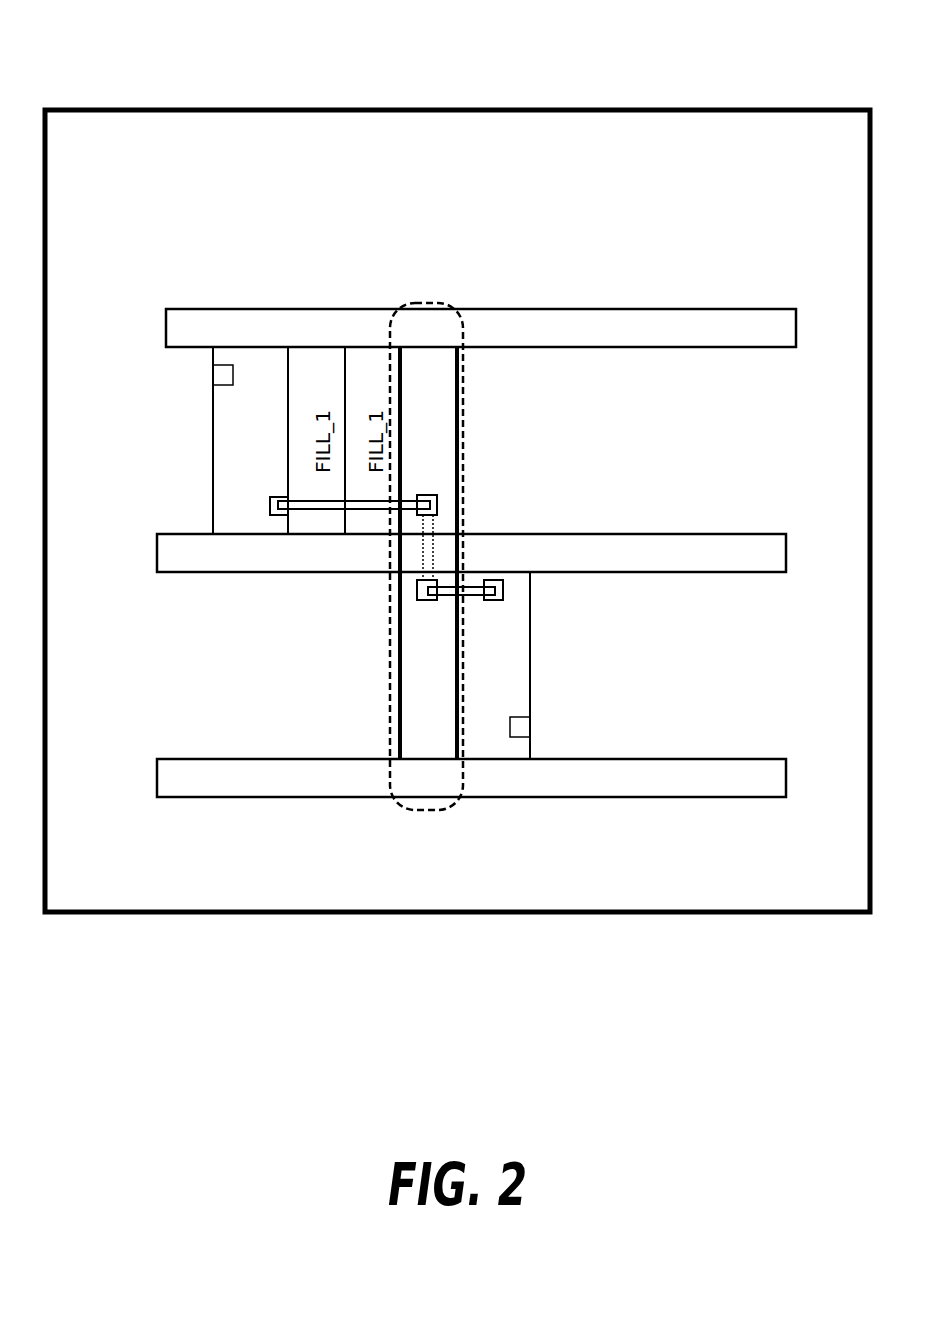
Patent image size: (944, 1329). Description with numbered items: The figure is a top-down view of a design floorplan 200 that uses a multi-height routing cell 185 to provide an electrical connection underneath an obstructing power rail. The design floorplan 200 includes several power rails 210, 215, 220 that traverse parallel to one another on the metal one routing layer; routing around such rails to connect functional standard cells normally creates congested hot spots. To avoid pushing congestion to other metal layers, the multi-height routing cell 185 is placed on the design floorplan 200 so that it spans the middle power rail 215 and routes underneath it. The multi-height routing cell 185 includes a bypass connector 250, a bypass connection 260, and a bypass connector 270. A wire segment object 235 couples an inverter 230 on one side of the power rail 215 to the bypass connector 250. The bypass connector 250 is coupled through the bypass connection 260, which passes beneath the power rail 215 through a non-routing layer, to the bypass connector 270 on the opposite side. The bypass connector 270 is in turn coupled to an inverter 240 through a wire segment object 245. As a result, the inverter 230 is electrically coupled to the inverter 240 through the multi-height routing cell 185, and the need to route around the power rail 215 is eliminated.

The design floorplan 200 is at (457, 458).
The multi-height routing cell 185 is at (295, 504).
The power rail 210 is at (443, 325).
The power rail 215 is at (433, 550).
The power rail 220 is at (433, 775).
The inverter 230 is at (212, 440).
The wire segment object 235 is at (261, 486).
The inverter 240 is at (534, 665).
The wire segment object 245 is at (542, 603).
The bypass connector 250 is at (587, 460).
The bypass connection 260 is at (583, 524).
The bypass connector 270 is at (282, 616).